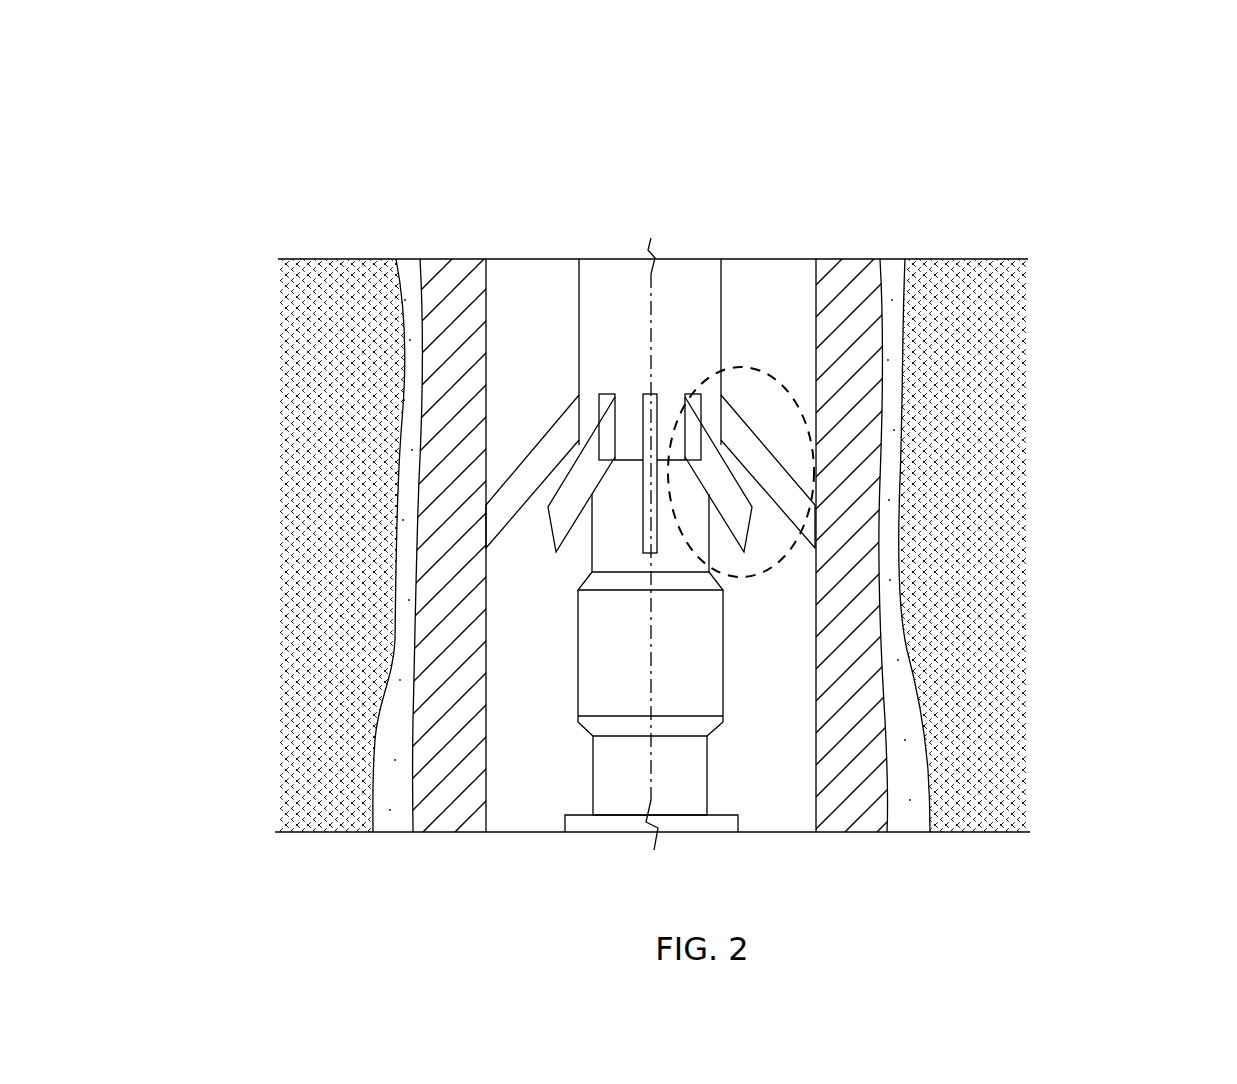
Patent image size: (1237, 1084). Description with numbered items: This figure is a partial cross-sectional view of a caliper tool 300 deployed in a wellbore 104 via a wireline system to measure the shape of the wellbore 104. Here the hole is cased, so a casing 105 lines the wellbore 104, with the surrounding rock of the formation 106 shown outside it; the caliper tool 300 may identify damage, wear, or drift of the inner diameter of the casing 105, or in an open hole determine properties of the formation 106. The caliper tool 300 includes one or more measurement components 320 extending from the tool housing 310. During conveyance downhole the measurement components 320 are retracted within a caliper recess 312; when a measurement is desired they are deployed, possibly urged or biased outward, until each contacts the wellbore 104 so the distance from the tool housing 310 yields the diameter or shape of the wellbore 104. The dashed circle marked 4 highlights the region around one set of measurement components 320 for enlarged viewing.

The caliper tool 300 is at (1124, 78).
The wellbore 104 is at (866, 156).
The casing 105 is at (808, 288).
The formation 106 is at (969, 280).
The tool housing 310 is at (720, 322).
The caliper recess 312 is at (643, 549).
The measurement components 320 is at (515, 473).
The detail view circle 4 is at (741, 463).